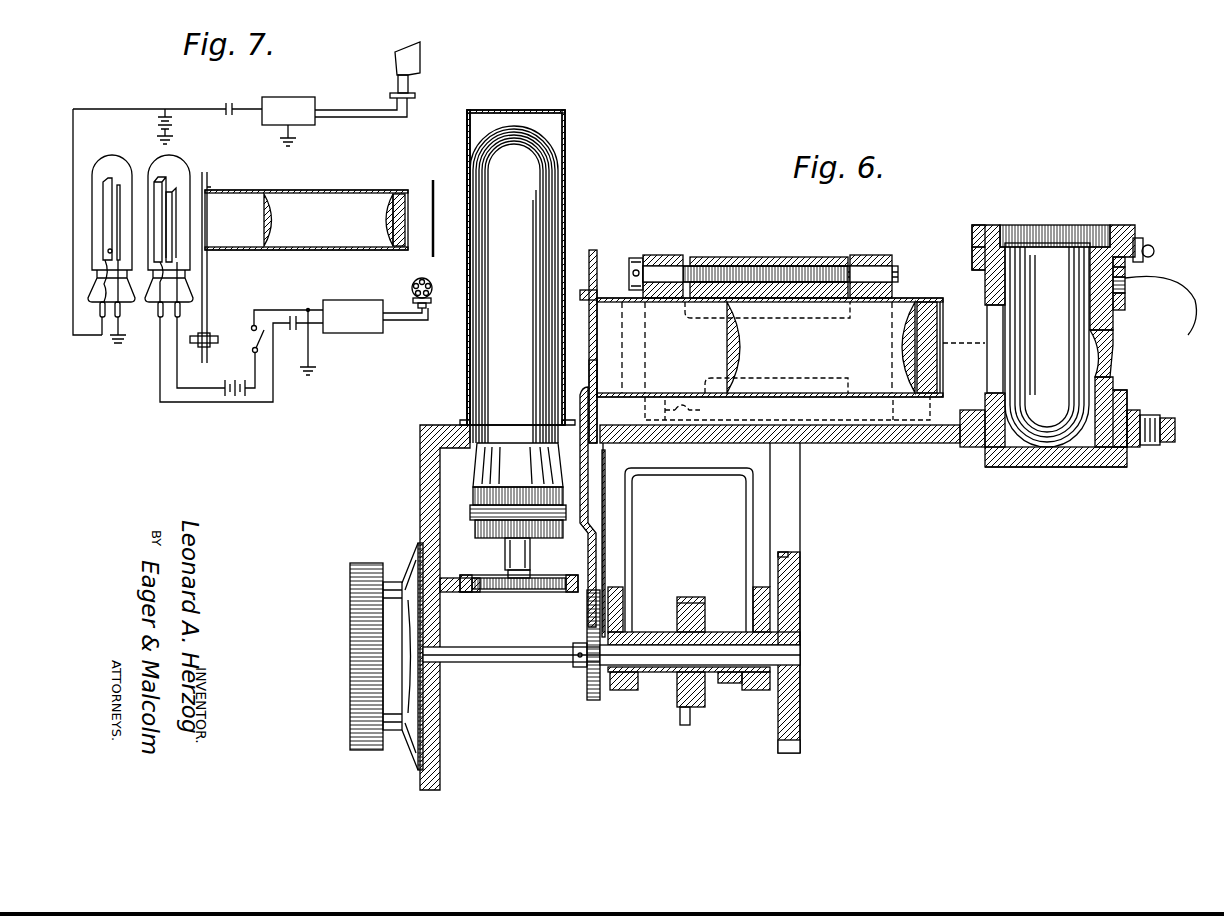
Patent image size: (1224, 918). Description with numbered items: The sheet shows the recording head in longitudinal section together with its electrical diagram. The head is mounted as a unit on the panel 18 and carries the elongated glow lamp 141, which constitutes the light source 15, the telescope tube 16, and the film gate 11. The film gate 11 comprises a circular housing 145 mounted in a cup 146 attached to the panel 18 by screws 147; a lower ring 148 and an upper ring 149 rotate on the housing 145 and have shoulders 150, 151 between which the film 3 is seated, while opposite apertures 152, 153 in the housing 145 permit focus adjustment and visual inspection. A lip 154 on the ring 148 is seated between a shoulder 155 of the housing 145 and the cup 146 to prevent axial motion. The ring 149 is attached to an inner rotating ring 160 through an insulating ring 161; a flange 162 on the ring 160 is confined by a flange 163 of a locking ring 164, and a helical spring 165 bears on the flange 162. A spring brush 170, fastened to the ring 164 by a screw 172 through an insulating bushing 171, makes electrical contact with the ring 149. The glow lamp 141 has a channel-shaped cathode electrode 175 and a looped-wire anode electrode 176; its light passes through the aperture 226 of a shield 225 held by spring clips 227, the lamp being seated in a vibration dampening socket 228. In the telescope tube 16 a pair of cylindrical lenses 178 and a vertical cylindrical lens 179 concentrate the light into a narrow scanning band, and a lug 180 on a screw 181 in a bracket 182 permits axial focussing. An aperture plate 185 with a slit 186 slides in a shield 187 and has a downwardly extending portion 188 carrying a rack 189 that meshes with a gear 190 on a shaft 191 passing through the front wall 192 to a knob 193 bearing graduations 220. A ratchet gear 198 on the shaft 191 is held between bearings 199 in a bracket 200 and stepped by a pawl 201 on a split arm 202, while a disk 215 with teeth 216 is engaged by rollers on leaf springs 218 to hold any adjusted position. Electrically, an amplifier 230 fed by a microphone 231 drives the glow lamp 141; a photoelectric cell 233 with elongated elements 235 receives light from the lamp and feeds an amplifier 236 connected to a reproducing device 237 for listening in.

In FIG. 7, the film 3 is at (431, 185).
In FIG. 6, the film 3 is at (986, 370).
In FIG. 6, the film gate 11 is at (1067, 340).
In FIG. 6, the light source 15 is at (561, 122).
In FIG. 7, the telescope tube 16 is at (340, 183).
In FIG. 6, the telescope tube 16 is at (790, 398).
In FIG. 6, the panel 18 is at (850, 443).
In FIG. 7, the glow lamp 141 is at (208, 196).
In FIG. 6, the glow lamp 141 is at (527, 216).
In FIG. 6, the housing 145 is at (1113, 376).
In FIG. 6, the cup 146 is at (1112, 467).
In FIG. 6, the screws 147 is at (1178, 425).
In FIG. 6, the lower ring 148 is at (1124, 395).
In FIG. 6, the upper ring 149 is at (1126, 303).
In FIG. 6, the shoulder 150 is at (1140, 413).
In FIG. 6, the shoulder 151 is at (1126, 287).
In FIG. 6, the aperture 152 is at (1008, 392).
In FIG. 6, the aperture 153 is at (1098, 346).
In FIG. 6, the lip 154 is at (977, 447).
In FIG. 6, the shoulder 155 is at (1088, 467).
In FIG. 6, the inner rotating ring 160 is at (1105, 315).
In FIG. 6, the insulating ring 161 is at (1116, 285).
In FIG. 6, the flange 162 is at (1120, 226).
In FIG. 6, the flange 163 is at (972, 262).
In FIG. 6, the locking ring 164 is at (972, 246).
In FIG. 6, the helical spring 165 is at (1128, 250).
In FIG. 6, the spring brush 170 is at (1160, 308).
In FIG. 6, the insulating bushing 171 is at (1125, 272).
In FIG. 6, the screw 172 is at (1154, 253).
In FIG. 7, the electrode 175 is at (163, 186).
In FIG. 7, the electrode 176 is at (174, 197).
In FIG. 6, the cylindrical lenses 178 is at (742, 347).
In FIG. 6, the cylindrical lens 179 is at (923, 333).
In FIG. 6, the lug 180 is at (728, 257).
In FIG. 6, the screw 181 is at (872, 262).
In FIG. 6, the bracket 182 is at (672, 243).
In FIG. 6, the aperture plate 185 is at (597, 370).
In FIG. 6, the slit 186 is at (597, 312).
In FIG. 6, the shield 187 is at (582, 528).
In FIG. 6, the downwardly extending portion 188 is at (605, 557).
In FIG. 6, the rack 189 is at (590, 692).
In FIG. 6, the gear 190 is at (578, 645).
In FIG. 6, the shaft 191 is at (502, 637).
In FIG. 6, the front wall 192 is at (441, 690).
In FIG. 6, the knob 193 is at (365, 548).
In FIG. 6, the ratchet gear 198 is at (684, 600).
In FIG. 6, the bearings 199 is at (625, 690).
In FIG. 6, the bracket 200 is at (750, 490).
In FIG. 6, the pawl 201 is at (682, 722).
In FIG. 6, the split arm 202 is at (728, 684).
In FIG. 6, the disk 215 is at (800, 612).
In FIG. 6, the teeth 216 is at (790, 556).
In FIG. 6, the leaf springs 218 is at (801, 516).
In FIG. 6, the graduations 220 is at (416, 545).
In FIG. 6, the shield 225 is at (566, 192).
In FIG. 6, the aperture 226 is at (548, 355).
In FIG. 6, the spring clips 227 is at (468, 350).
In FIG. 6, the vibration dampening socket 228 is at (488, 538).
In FIG. 7, the amplifier 230 is at (362, 292).
In FIG. 7, the microphone 231 is at (424, 278).
In FIG. 7, the photoelectric cell 233 is at (97, 195).
In FIG. 7, the elongated elements 235 is at (105, 183).
In FIG. 7, the amplifier 236 is at (300, 98).
In FIG. 7, the reproducing device 237 is at (396, 66).